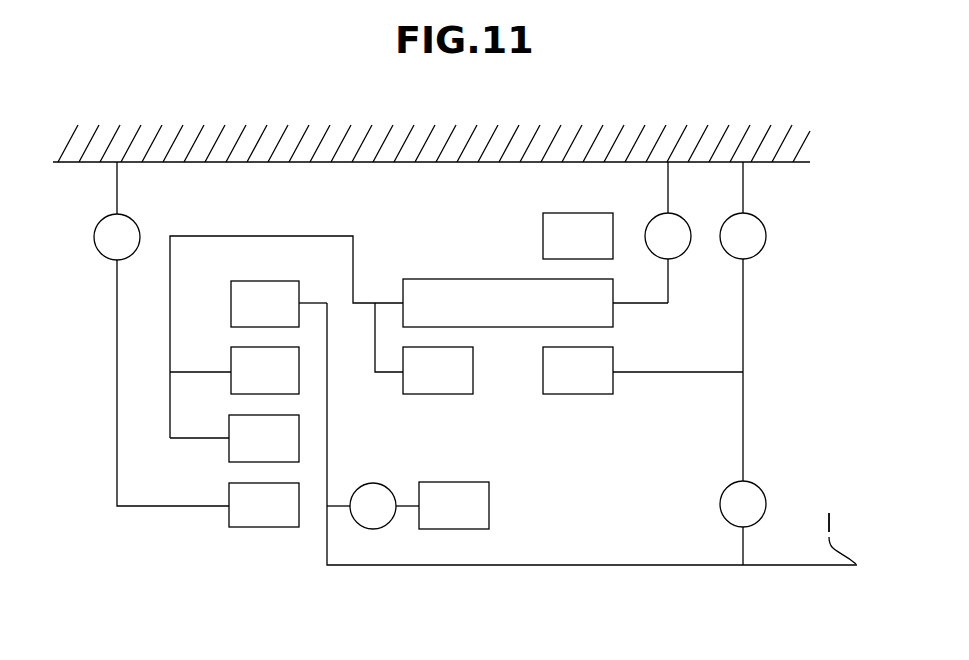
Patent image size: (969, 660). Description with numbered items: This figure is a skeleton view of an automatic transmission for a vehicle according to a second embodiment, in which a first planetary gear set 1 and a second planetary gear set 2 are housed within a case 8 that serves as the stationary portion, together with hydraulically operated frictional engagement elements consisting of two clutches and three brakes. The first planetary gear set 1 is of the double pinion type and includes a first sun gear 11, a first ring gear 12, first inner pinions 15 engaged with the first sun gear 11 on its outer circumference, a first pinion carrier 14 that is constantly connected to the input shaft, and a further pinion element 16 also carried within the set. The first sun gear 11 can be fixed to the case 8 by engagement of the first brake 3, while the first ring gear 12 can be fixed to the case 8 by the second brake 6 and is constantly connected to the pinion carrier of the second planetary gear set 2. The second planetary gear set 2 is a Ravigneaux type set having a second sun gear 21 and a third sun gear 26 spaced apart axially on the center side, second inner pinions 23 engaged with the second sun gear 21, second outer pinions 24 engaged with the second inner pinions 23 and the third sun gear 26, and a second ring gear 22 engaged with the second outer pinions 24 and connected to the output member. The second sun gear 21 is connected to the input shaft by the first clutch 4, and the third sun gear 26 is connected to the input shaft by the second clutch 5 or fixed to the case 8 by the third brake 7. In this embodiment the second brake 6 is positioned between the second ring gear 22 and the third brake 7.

The first planetary gear set 1 is at (246, 549).
The second planetary gear set 2 is at (563, 464).
The first brake 3 is at (94, 237).
The first clutch 4 is at (372, 483).
The second clutch 5 is at (766, 508).
The second brake 6 is at (677, 257).
The third brake 7 is at (767, 236).
The case 8 is at (447, 116).
The first sun gear 11 is at (229, 516).
The first ring gear 12 is at (233, 282).
The first pinion carrier 14 is at (170, 310).
The first inner pinions 15 is at (233, 415).
The communication unit 16 is at (233, 348).
The second sun gear 21 is at (489, 511).
The second ring gear 22 is at (543, 232).
The second inner pinions 23 is at (473, 372).
The second outer pinions 24 is at (497, 278).
The third sun gear 26 is at (615, 360).